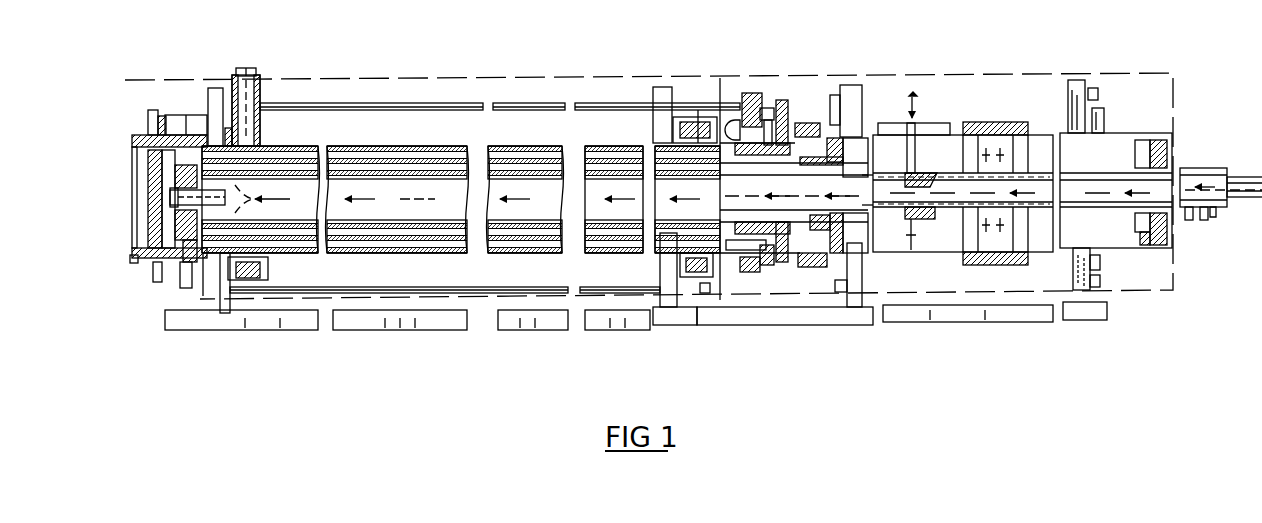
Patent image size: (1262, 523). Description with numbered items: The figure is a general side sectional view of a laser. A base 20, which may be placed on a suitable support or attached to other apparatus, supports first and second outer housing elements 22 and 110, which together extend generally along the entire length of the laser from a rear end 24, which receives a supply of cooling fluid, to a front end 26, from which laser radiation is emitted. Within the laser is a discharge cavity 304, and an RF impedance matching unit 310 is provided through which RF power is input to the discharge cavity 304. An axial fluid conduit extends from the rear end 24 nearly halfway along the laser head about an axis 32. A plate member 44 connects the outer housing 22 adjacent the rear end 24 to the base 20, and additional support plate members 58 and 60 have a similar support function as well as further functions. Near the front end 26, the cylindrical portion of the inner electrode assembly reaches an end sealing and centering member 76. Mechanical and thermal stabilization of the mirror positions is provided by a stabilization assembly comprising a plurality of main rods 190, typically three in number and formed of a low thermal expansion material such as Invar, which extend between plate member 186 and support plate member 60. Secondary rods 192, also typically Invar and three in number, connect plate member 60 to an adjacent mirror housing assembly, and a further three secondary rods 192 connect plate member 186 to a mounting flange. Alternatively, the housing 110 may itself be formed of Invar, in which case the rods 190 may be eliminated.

The base 20 is at (762, 320).
The first outer housing element 22 is at (1060, 162).
The rear end 24 is at (1182, 123).
The front end 26 is at (180, 165).
The axis 32 is at (1078, 187).
The plate member 44 is at (1087, 290).
The support plate member 58 is at (862, 307).
The support plate member 60 is at (672, 307).
The end sealing and centering member 76 is at (197, 173).
The second outer housing element 110 is at (532, 146).
The plate member 186 is at (223, 310).
The main rods 190 is at (384, 103).
The secondary rods 192 is at (178, 128).
The discharge cavity 304 is at (468, 79).
The RF impedance matching unit 310 is at (898, 73).